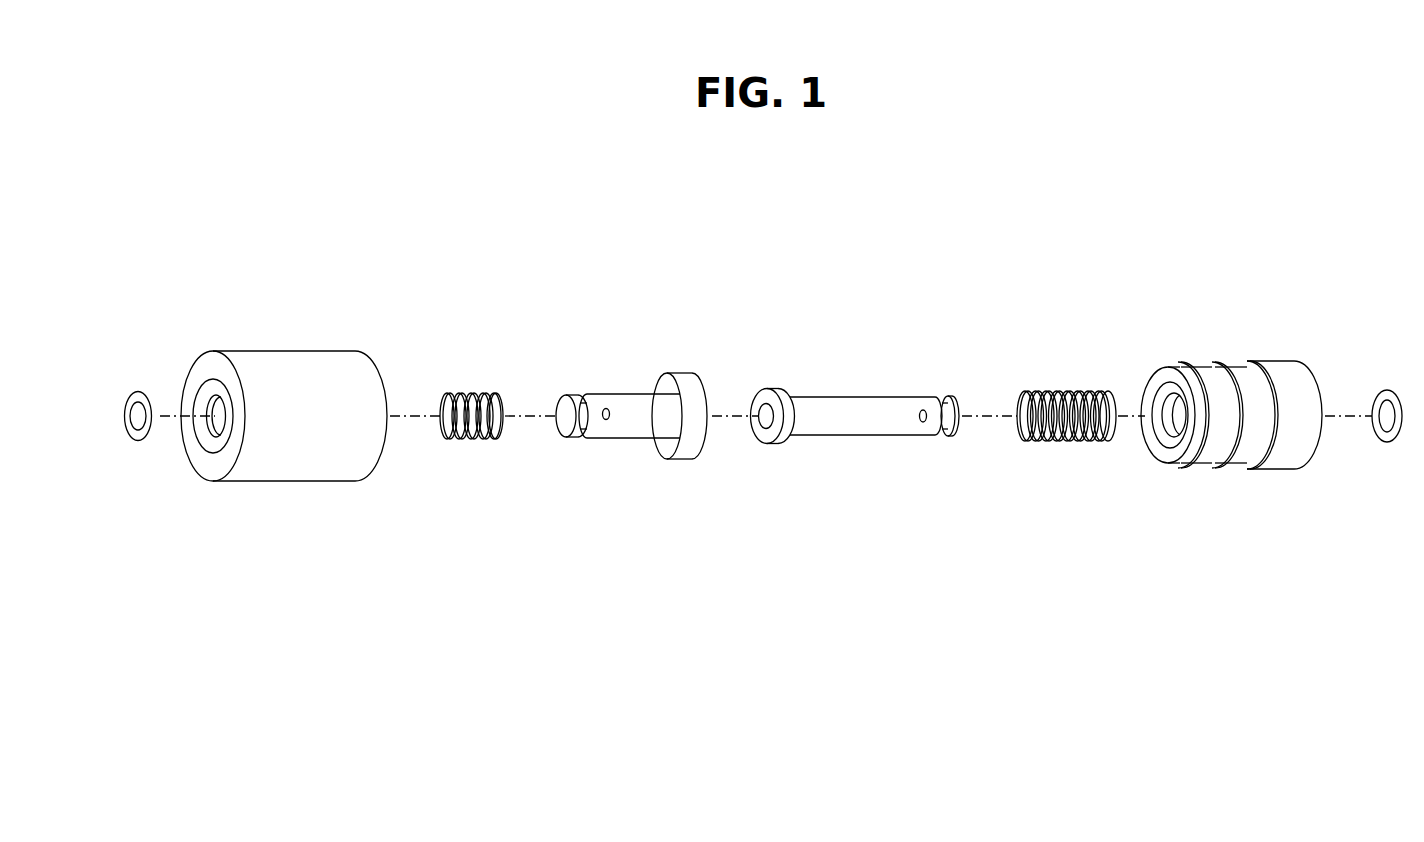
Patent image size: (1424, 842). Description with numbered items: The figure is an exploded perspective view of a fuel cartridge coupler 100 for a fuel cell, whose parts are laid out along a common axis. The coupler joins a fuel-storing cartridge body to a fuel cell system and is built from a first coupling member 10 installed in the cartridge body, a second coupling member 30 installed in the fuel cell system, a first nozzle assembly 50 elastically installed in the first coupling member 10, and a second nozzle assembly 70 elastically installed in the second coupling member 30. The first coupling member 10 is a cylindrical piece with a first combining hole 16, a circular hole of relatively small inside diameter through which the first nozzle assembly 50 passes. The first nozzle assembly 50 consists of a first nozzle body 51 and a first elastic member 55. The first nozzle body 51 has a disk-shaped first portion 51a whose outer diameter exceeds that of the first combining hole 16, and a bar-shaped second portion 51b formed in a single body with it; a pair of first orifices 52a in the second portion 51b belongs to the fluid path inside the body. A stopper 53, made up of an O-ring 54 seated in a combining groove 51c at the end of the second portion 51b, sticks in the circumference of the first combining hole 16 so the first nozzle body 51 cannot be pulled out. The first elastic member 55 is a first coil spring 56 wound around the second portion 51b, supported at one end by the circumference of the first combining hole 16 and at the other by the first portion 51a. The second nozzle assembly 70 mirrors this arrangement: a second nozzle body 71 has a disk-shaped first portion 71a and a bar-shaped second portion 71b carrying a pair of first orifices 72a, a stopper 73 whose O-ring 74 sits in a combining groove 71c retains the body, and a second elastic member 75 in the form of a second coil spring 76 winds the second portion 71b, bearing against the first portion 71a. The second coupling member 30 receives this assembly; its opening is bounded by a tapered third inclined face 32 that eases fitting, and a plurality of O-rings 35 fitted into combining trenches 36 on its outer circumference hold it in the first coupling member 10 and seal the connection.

The fuel cartridge coupler 100 is at (726, 204).
The first coupling member 10 is at (338, 331).
The first combining hole 16 is at (217, 403).
The second coupling member 30 is at (1280, 318).
The third inclined face 32 is at (1163, 463).
The O-ring 35 is at (1220, 469).
The combining trench 36 is at (1173, 403).
The first nozzle assembly 50 is at (606, 319).
The first nozzle body 51 is at (710, 513).
The first portion 51a is at (687, 456).
The second portion 51b is at (623, 434).
The combining groove 51c is at (581, 397).
The first orifices 52a is at (610, 411).
The stopper 53 is at (140, 456).
The O-ring 54 is at (139, 389).
The first elastic member 55 is at (474, 450).
The first coil spring 56 is at (482, 395).
The second nozzle assembly 70 is at (1021, 318).
The second nozzle body 71 is at (863, 513).
The first portion 71a is at (773, 441).
The second portion 71b is at (843, 434).
The combining groove 71c is at (937, 397).
The first orifices 72a is at (917, 412).
The stopper 73 is at (1389, 447).
The O-ring 74 is at (1385, 391).
The second elastic member 75 is at (1069, 446).
The second coil spring 76 is at (1077, 392).